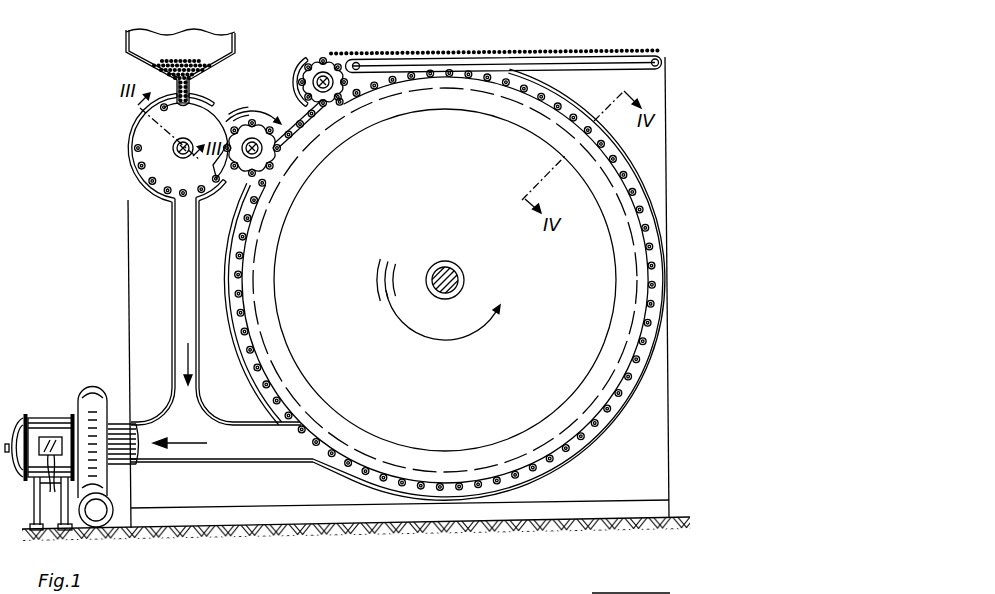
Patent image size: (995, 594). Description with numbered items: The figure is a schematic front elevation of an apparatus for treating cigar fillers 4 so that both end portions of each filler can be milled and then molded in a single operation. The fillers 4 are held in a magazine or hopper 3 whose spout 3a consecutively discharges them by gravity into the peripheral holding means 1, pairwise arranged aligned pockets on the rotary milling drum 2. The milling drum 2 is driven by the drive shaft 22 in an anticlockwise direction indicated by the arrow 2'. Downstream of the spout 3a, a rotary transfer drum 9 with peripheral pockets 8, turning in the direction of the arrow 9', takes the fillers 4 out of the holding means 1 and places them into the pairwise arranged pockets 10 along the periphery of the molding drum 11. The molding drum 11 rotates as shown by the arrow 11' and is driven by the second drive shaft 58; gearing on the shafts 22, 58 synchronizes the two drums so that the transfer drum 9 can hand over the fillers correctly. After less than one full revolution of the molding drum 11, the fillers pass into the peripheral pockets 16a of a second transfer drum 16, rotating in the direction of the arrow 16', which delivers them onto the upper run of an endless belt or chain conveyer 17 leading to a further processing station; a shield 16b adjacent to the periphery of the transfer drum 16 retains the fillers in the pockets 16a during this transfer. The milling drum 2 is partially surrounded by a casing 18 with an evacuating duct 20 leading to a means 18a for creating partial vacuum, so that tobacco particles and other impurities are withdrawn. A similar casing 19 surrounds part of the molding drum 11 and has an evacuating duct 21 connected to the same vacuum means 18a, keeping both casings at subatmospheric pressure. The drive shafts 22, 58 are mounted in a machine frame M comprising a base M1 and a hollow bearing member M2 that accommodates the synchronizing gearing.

The peripheral holding means 1 is at (198, 106).
The milling drum 2 is at (185, 137).
The arrow 2' is at (185, 216).
The hopper 3 is at (236, 38).
The spout 3a is at (193, 76).
The fillers 4 is at (167, 60).
The peripheral pockets 8 is at (238, 190).
The transfer drum 9 is at (263, 140).
The arrow 9' is at (253, 102).
The pockets 10 is at (300, 136).
The molding drum 11 is at (437, 280).
The arrow 11' is at (445, 280).
The second transfer drum 16 is at (331, 57).
The arrow 16' is at (308, 27).
The peripheral pockets 16a is at (354, 56).
The shield 16b is at (283, 88).
The endless belt or chain conveyer 17 is at (656, 51).
The casing 18 is at (165, 203).
The means for creating partial vacuum 18a is at (76, 402).
The casing 19 is at (585, 447).
The evacuating duct 20 is at (170, 328).
The evacuating duct 21 is at (277, 463).
The drive shaft 22 is at (172, 146).
The second drive shaft 58 is at (458, 290).
The machine frame M is at (678, 413).
The base M1 is at (655, 513).
The hollow bearing member M2 is at (660, 168).